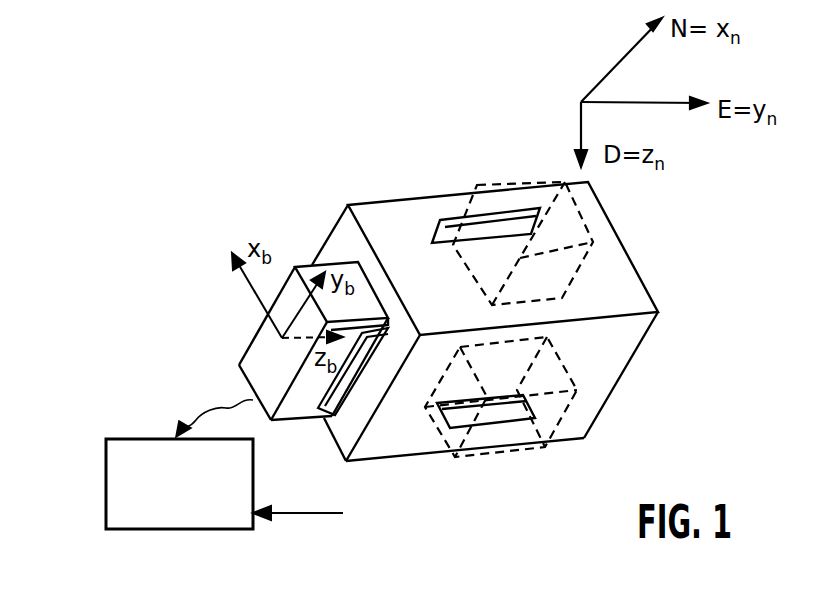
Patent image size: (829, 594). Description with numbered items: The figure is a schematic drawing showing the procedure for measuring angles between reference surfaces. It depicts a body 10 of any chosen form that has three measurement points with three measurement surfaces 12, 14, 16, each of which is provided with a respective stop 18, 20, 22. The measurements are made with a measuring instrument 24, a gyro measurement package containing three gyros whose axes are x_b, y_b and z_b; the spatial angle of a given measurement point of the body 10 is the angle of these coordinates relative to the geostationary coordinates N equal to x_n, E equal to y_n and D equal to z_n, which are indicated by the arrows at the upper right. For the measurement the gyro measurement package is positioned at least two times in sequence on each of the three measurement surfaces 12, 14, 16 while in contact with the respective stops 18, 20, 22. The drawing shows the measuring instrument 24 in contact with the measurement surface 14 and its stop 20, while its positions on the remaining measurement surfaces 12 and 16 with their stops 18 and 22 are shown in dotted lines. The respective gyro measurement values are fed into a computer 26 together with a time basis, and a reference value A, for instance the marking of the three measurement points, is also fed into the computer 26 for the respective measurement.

The body 10 is at (377, 194).
The measurement surface 12 is at (410, 217).
The measurement surface 14 is at (343, 242).
The measurement surface 16 is at (612, 355).
The stop 18 is at (493, 220).
The stop 20 is at (338, 412).
The stop 22 is at (503, 413).
The measuring instrument 24 is at (258, 347).
The computer 26 is at (147, 453).